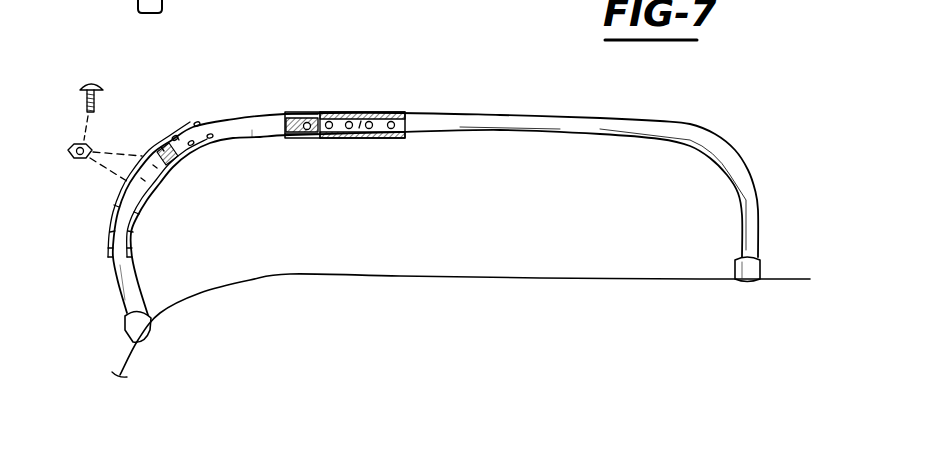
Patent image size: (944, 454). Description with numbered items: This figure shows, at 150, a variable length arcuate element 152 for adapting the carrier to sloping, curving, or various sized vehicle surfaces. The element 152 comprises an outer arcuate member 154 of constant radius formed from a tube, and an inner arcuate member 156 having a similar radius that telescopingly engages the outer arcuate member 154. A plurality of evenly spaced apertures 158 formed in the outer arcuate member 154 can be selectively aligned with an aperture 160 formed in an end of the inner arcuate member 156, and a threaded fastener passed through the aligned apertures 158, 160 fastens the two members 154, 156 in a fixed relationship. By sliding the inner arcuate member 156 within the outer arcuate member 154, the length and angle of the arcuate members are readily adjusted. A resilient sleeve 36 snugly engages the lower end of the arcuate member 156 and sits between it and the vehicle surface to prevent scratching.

The resilient sleeve 36 is at (125, 325).
The variable length arcuate element assembly 150 is at (309, 101).
The variable length arcuate element 152 is at (189, 112).
The outer arcuate member 154 is at (252, 131).
The inner arcuate member 156 is at (133, 279).
The evenly spaced apertures 158 is at (203, 119).
The aperture 160 is at (143, 157).